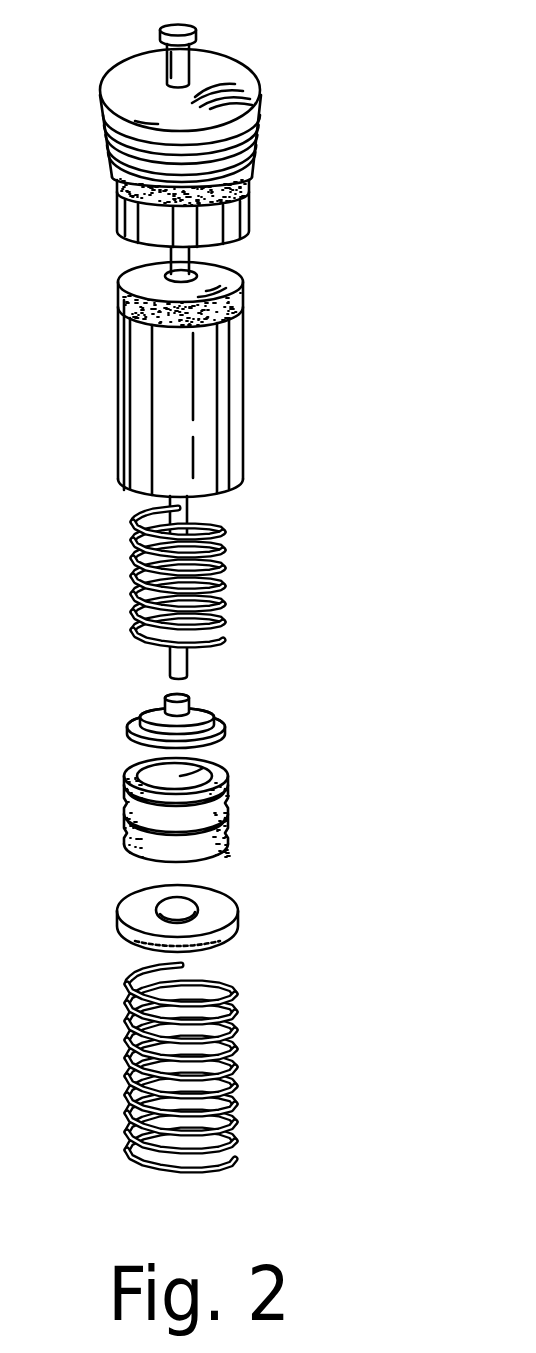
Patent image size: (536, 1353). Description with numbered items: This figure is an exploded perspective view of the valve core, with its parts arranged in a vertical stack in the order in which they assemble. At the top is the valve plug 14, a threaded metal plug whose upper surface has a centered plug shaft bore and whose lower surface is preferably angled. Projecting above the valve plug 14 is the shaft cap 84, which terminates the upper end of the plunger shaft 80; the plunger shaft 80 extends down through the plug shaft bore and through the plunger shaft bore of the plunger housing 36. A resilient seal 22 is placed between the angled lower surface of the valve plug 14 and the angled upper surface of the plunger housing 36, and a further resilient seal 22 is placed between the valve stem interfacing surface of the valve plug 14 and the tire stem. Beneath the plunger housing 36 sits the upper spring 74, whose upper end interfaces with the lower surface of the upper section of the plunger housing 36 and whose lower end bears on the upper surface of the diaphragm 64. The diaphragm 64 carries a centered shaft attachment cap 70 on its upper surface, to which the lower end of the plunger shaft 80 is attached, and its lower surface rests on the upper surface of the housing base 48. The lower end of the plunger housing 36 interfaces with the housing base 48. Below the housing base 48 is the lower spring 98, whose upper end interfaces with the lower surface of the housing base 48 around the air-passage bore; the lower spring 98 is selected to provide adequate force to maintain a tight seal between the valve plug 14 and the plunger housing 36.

The shaft cap 84 is at (178, 33).
The valve plug 14 is at (262, 103).
The resilient seal 22 is at (252, 173).
The plunger shaft 80 is at (189, 266).
The plunger housing 36 is at (202, 408).
The upper spring 74 is at (225, 570).
The shaft attachment cap 70 is at (200, 720).
The diaphragm 64 is at (220, 800).
The housing base 48 is at (213, 903).
The lower spring 98 is at (237, 1047).